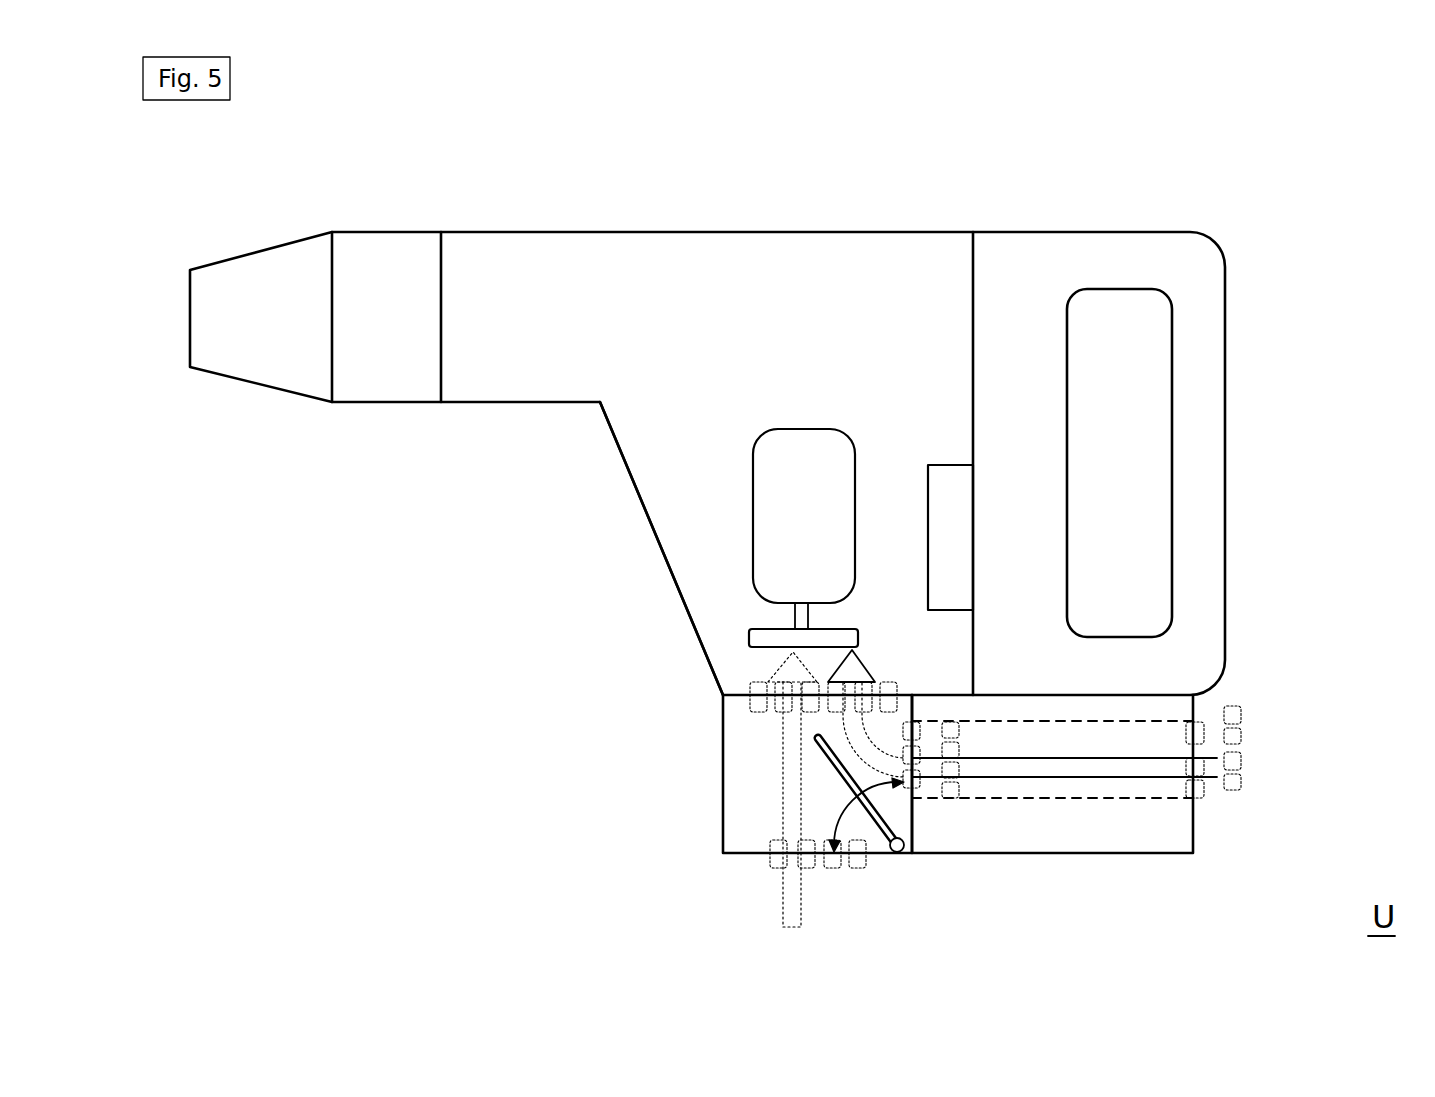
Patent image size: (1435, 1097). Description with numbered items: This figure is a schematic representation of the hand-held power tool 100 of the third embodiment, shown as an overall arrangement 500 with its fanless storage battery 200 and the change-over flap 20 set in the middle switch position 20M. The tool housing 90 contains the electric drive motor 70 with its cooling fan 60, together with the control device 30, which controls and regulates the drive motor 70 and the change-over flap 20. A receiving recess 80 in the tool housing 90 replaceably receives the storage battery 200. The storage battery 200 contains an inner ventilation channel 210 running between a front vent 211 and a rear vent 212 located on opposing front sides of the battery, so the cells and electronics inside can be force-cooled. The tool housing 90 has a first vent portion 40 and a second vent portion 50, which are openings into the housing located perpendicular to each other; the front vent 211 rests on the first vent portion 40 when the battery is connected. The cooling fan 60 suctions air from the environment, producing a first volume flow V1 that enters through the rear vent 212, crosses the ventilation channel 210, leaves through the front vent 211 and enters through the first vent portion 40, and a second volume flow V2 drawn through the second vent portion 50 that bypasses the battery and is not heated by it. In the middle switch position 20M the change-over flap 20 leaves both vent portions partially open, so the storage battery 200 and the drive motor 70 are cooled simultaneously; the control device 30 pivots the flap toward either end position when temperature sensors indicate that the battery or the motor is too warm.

The hand-held power tool 100 is at (1043, 188).
The blower system 500 is at (388, 707).
The control device 30 is at (957, 508).
The receiving recess 80 is at (933, 712).
The first vent portion 40 is at (913, 747).
The front vent 211 is at (913, 777).
The rear vent 212 is at (1195, 741).
The first volume flow V1 is at (1205, 765).
The inner ventilation channel 210 is at (1150, 792).
The storage battery 200 is at (965, 830).
The second vent portion 50 is at (833, 860).
The second volume flow V2 is at (788, 900).
The change-over flap 20 is at (860, 777).
The middle switch position 20M is at (705, 820).
The cooling fan 60 is at (770, 637).
The tool housing 90 is at (722, 546).
The electric drive motor 70 is at (806, 477).